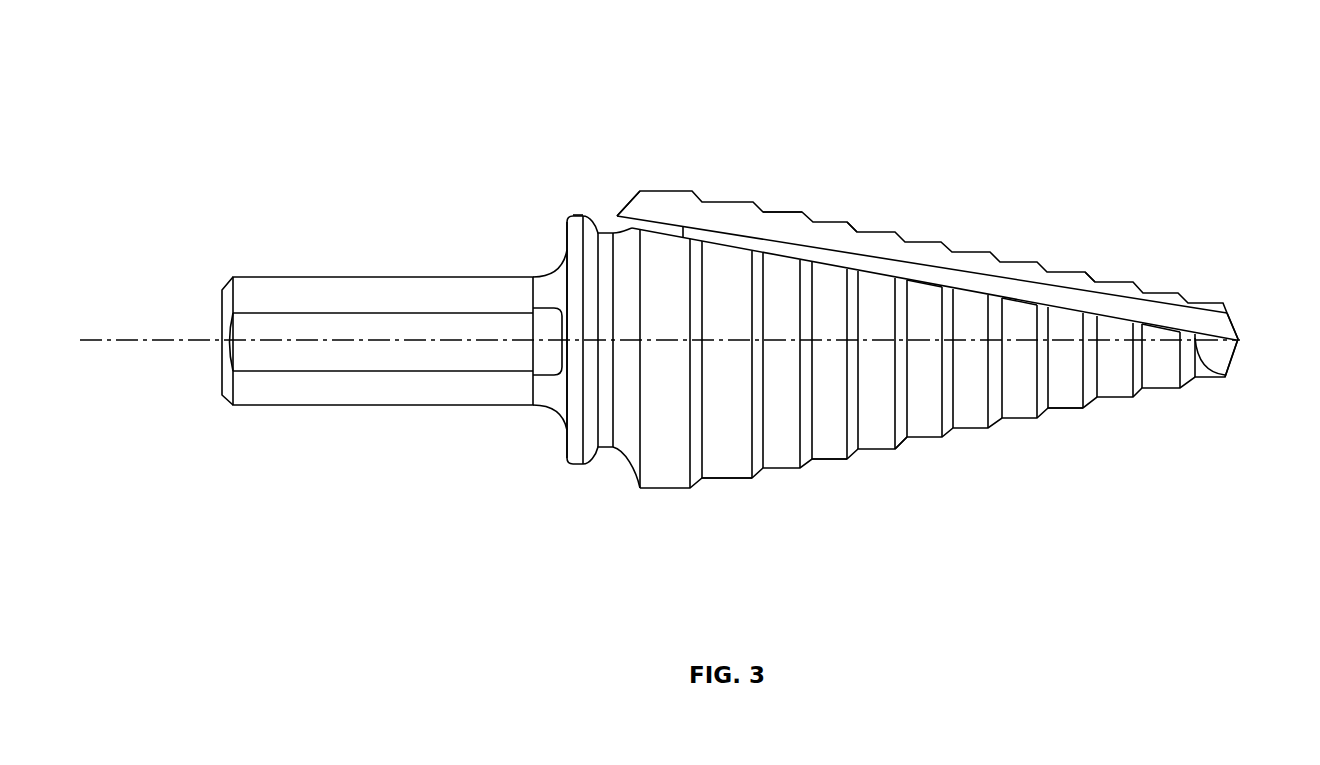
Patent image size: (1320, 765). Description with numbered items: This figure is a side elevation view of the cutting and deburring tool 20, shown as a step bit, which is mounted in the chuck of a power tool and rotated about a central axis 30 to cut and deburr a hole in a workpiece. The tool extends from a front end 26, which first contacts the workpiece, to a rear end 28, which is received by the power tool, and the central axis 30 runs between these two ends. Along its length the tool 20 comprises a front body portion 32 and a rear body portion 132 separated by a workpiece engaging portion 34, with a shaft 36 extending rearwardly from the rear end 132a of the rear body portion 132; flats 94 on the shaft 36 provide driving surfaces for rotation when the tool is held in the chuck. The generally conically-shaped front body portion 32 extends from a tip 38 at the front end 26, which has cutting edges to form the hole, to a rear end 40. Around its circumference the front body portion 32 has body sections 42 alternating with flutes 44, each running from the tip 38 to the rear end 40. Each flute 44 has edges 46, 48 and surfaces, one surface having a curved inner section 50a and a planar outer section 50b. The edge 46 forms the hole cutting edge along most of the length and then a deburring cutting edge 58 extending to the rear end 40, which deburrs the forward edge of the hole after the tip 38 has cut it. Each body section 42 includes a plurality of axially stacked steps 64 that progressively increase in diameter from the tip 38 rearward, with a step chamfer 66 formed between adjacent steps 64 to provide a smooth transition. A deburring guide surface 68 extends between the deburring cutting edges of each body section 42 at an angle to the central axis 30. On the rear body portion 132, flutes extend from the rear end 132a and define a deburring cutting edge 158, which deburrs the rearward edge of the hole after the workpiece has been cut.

The cutting and deburring tool 20 is at (1022, 97).
The front end 26 is at (1240, 340).
The rear end 28 is at (222, 385).
The central axis 30 is at (162, 343).
The front body portion 32 is at (845, 456).
The workpiece engaging portion 34 is at (604, 453).
The shaft 36 is at (330, 283).
The tip 38 is at (1228, 352).
The rear end of front body portion 40 is at (613, 448).
The body section 42 is at (781, 442).
The flute 44 is at (1017, 274).
The edge of flute 46 is at (845, 221).
The edge of flute 48 is at (927, 283).
The inner section of surface 50a is at (1153, 313).
The outer section of surface 50b is at (1085, 283).
The deburring cutting edge 58 is at (618, 212).
The step 64 is at (1065, 398).
The step chamfer 66 is at (895, 440).
The deburring guide surface 68 is at (628, 288).
The flats 94 is at (400, 357).
The rear body portion 132 is at (575, 471).
The rear end of rear body portion 132a is at (565, 236).
The deburring cutting edge 158 is at (572, 213).